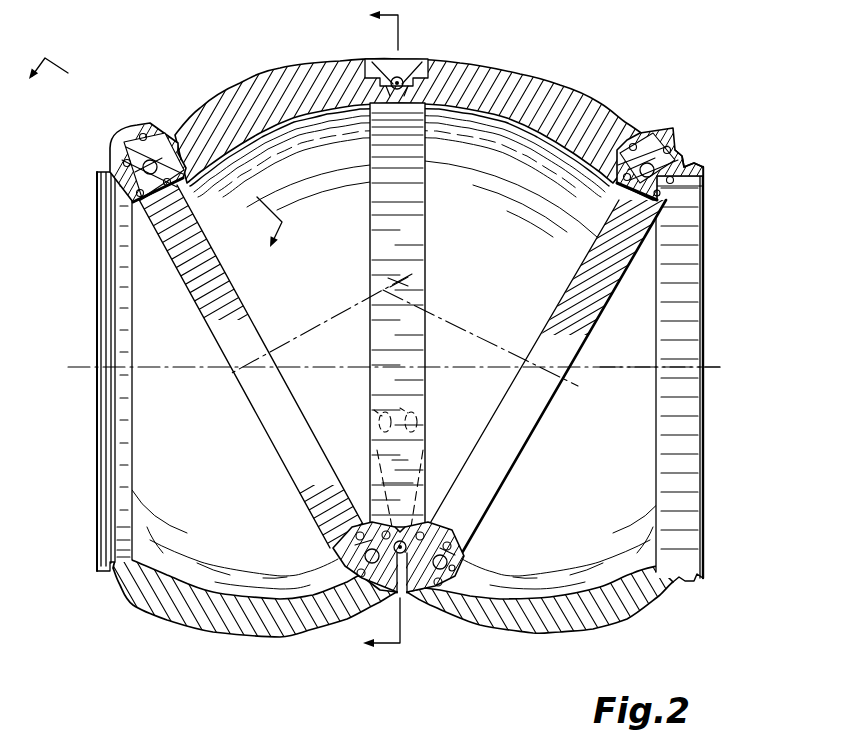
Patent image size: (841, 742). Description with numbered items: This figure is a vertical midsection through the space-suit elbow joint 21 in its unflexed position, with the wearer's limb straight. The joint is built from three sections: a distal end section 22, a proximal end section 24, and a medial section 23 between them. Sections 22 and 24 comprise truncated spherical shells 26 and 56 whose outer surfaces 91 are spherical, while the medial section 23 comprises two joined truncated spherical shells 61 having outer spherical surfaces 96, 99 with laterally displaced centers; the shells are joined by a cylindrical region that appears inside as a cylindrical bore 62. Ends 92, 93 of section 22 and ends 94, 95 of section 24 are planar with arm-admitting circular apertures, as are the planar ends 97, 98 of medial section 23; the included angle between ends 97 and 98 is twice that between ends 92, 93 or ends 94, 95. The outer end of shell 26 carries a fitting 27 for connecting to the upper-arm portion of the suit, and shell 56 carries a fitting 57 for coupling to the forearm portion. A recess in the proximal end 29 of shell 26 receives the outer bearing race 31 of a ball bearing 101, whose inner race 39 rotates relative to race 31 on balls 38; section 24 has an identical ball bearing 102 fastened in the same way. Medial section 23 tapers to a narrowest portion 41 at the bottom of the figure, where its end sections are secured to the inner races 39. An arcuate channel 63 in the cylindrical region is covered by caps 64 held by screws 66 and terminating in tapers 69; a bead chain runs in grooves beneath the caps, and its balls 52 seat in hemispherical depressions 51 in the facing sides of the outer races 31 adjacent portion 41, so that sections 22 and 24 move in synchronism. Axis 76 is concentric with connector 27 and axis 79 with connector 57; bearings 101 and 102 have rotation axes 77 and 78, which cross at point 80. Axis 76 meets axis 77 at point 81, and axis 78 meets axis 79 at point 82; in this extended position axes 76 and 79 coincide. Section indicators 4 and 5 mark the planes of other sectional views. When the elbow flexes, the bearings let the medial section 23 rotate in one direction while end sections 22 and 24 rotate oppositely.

The section line 4- 4 is at (381, 338).
The section line 5- 5 is at (163, 141).
The housing 21 is at (456, 108).
The distal end section 22 is at (706, 390).
The medial section 23 is at (507, 70).
The proximal end section 24 is at (262, 581).
The truncated spherical shell 26 is at (623, 625).
The fitting 27 is at (692, 575).
The proximal end 29 is at (118, 148).
The outer bearing race 31 is at (128, 155).
The balls 38 is at (167, 170).
The inner race 39 is at (173, 180).
The narrowest portion 41 is at (428, 522).
The hemispherical depressions 51 is at (178, 138).
The balls of bead chain 52 is at (377, 110).
The truncated spherical shell 56 is at (212, 633).
The fitting 57 is at (100, 476).
The truncated spherical shells 61 is at (456, 108).
The cylindrical bore 62 is at (396, 315).
The arcuate channel 63 is at (420, 70).
The caps 64 is at (393, 82).
The screws 66 is at (374, 410).
The tapers 69 is at (367, 480).
The axis 76 is at (608, 370).
The axis of rotation 77 is at (478, 336).
The axis of rotation 78 is at (333, 318).
The axis 79 is at (163, 366).
The intersection point 80 is at (397, 275).
The point 81 is at (572, 384).
The point 82 is at (270, 362).
The outer surfaces 91 is at (408, 581).
The end 92 is at (705, 187).
The end 93 is at (683, 142).
The end 94 is at (89, 371).
The end 95 is at (150, 126).
The outer spherical surface 96 is at (456, 108).
The end 97 is at (268, 437).
The end 98 is at (552, 335).
The outer spherical surface 99 is at (456, 108).
The ball bearing 101 is at (690, 146).
The ball bearing 102 is at (190, 168).